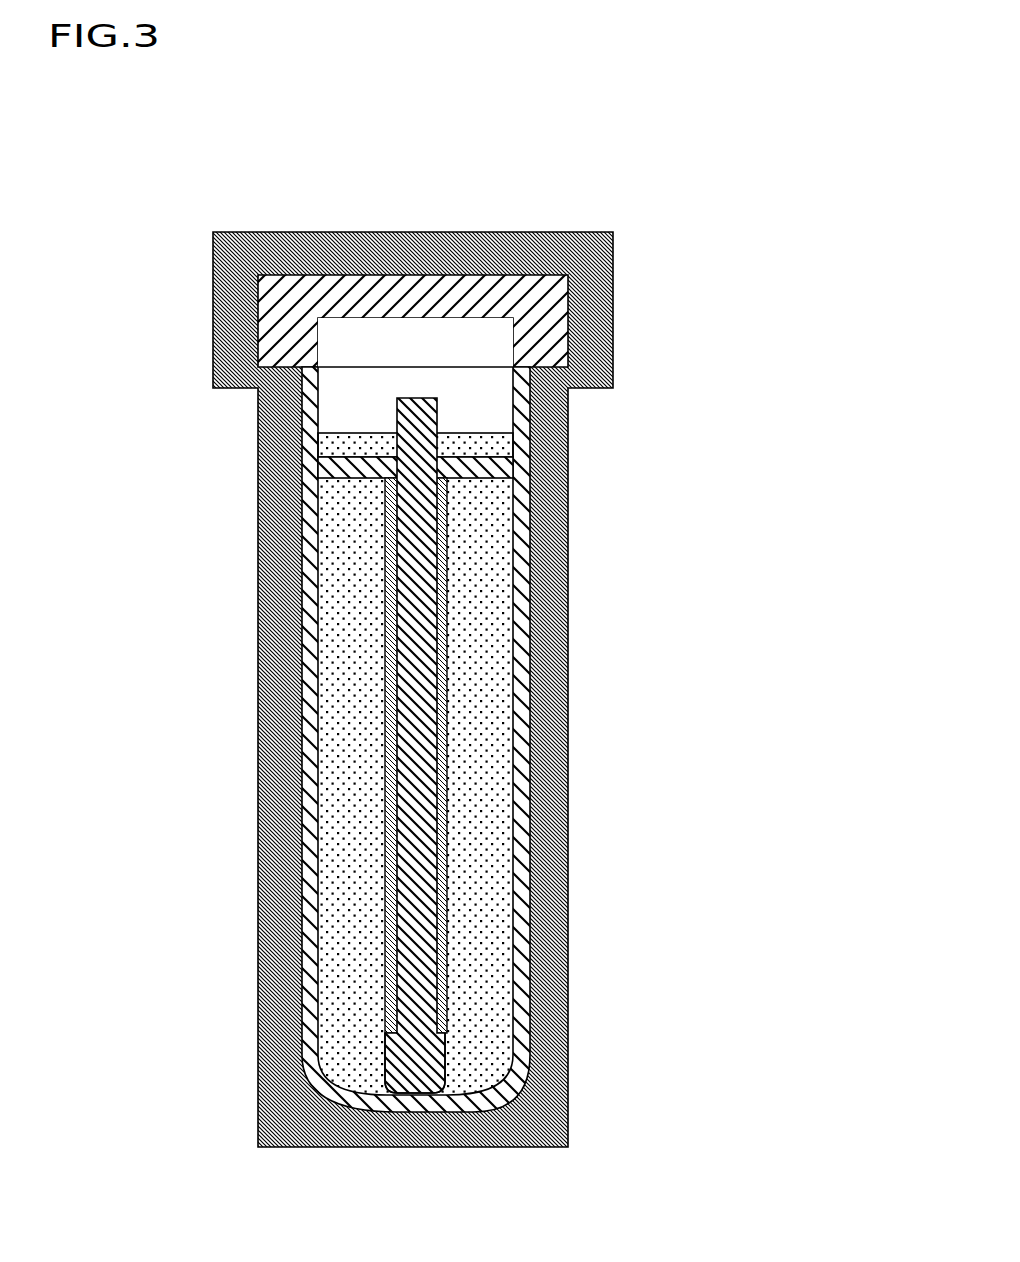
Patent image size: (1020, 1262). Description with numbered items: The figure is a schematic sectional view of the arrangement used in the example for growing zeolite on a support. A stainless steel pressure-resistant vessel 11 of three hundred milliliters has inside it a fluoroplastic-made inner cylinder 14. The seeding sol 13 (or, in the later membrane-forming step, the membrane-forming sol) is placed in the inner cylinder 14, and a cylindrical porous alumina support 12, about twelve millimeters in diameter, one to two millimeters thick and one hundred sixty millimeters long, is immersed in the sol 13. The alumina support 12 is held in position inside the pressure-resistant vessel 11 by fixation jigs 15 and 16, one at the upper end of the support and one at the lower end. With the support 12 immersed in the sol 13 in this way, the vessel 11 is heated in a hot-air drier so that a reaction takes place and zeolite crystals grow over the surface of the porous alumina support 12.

The pressure-resistant vessel 11 is at (246, 568).
The porous alumina support 12 is at (447, 812).
The seeding sol 13 is at (486, 673).
The inner cylinder 14 is at (512, 968).
The fixation jig 15 is at (385, 1059).
The fixation jig 16 is at (482, 480).